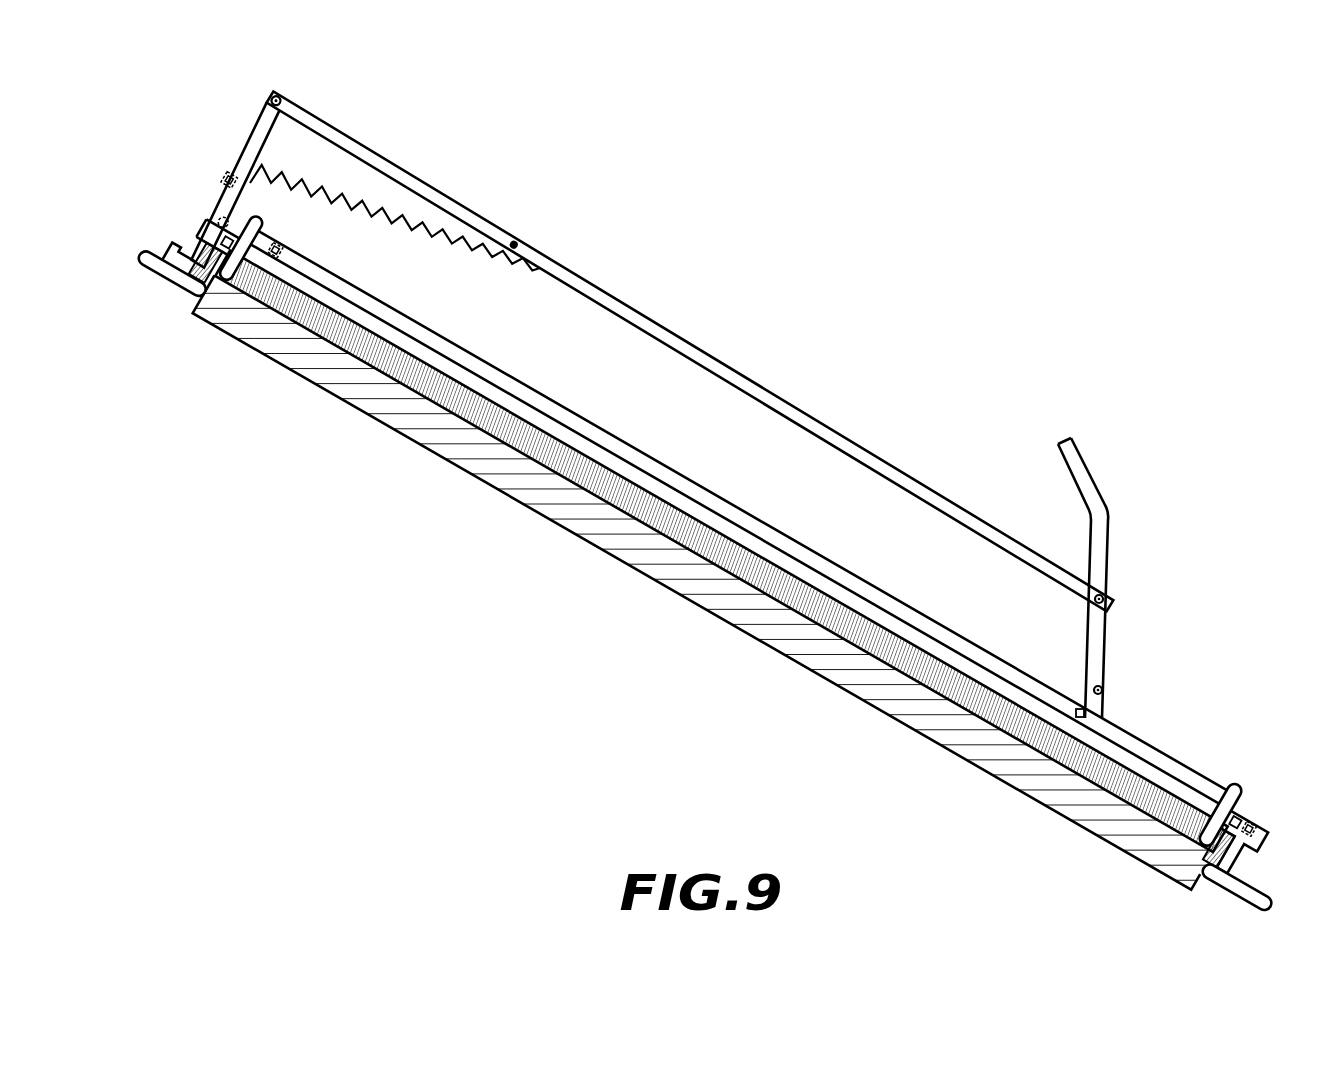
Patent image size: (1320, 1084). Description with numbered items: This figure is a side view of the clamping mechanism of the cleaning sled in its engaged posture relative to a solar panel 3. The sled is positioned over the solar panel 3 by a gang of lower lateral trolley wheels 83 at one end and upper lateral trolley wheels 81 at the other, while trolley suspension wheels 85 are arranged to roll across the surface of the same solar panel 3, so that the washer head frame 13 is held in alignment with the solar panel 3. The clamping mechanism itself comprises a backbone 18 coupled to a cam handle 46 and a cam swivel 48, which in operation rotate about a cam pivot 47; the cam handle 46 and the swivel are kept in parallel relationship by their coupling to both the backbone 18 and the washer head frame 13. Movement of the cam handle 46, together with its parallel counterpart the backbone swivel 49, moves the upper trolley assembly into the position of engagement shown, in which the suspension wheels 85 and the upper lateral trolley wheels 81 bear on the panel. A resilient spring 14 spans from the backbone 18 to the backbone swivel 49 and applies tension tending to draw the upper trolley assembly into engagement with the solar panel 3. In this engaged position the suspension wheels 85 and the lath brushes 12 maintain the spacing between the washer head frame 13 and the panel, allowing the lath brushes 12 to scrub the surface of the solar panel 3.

The solar panel 3 is at (1080, 806).
The lath brushes 12 is at (776, 580).
The washer head frame 13 is at (637, 460).
The resilient spring 14 is at (338, 185).
The backbone 18 is at (652, 327).
The cam handle 46 is at (1082, 480).
The cam pivot 47 is at (1110, 600).
The cam swivel 48 is at (1102, 690).
The backbone swivel 49 is at (272, 97).
The upper lateral trolley wheels 81 is at (162, 268).
The lower lateral trolley wheels 83 is at (1244, 906).
The trolley suspension wheels 85 is at (263, 218).